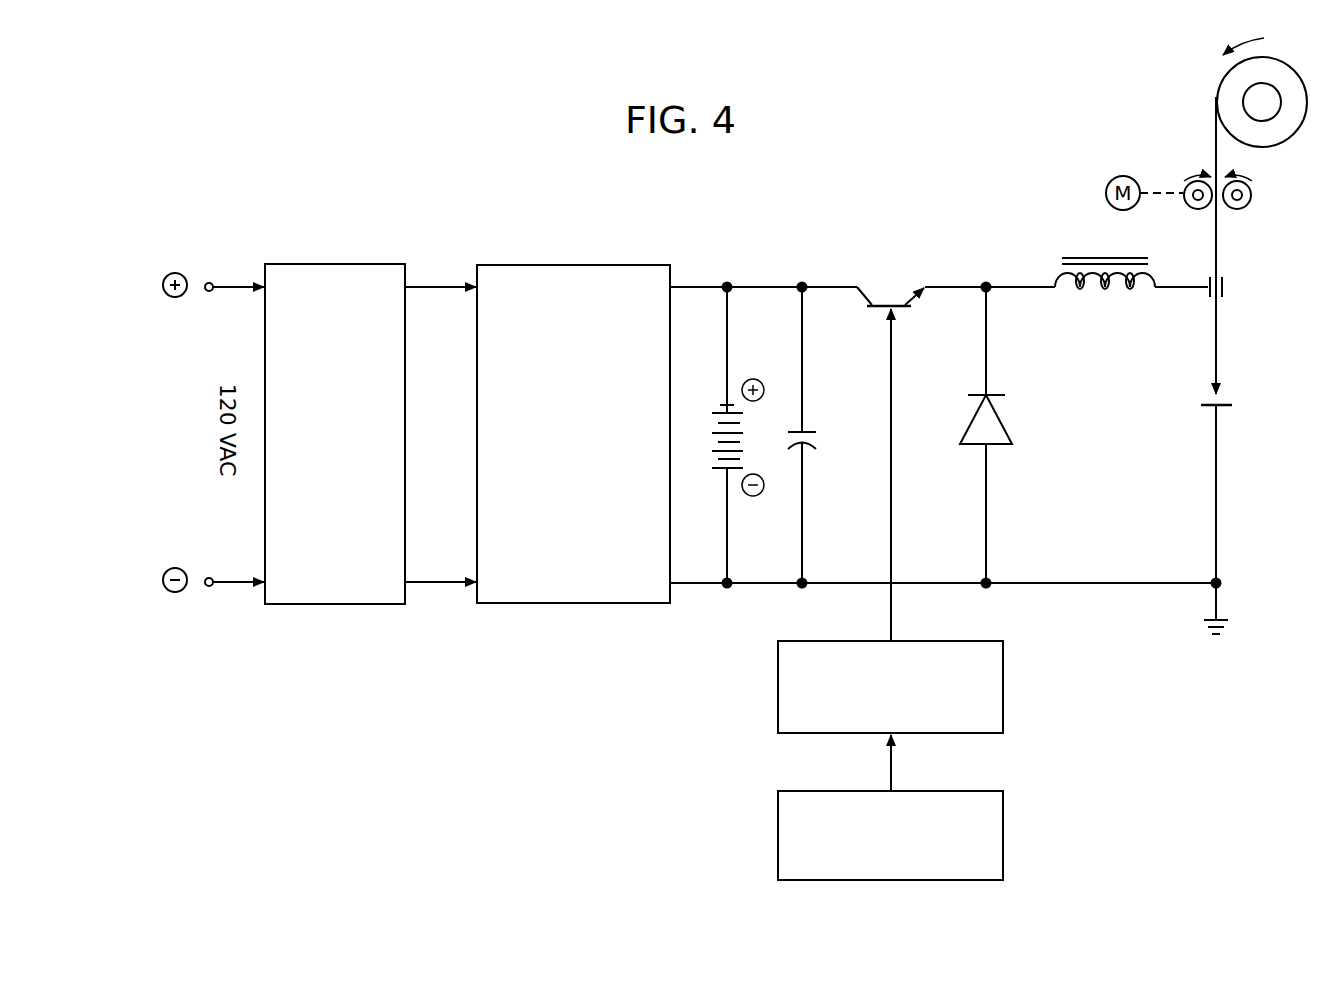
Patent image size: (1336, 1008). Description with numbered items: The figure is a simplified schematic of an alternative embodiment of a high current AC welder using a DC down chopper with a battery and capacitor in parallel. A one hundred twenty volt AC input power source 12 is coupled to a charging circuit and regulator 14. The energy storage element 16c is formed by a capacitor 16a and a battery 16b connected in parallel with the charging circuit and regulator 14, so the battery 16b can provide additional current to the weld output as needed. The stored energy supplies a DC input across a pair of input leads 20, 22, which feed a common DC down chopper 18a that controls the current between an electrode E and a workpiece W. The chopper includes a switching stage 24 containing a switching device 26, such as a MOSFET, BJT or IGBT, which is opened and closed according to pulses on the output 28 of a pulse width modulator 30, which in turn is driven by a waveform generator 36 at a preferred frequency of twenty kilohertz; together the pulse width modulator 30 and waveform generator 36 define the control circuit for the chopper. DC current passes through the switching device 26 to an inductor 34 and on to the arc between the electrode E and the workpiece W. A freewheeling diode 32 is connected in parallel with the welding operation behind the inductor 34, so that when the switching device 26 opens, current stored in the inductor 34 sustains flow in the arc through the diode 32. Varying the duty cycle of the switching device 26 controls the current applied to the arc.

The AC input power source 12 is at (342, 262).
The charging circuit and regulator 14 is at (582, 265).
The capacitor 16a is at (815, 428).
The battery 16b is at (719, 392).
The energy storage element 16c is at (753, 592).
The DC down chopper 18a is at (999, 593).
The input lead 20 is at (838, 284).
The input lead 22 is at (1083, 590).
The switching stage 24 is at (905, 312).
The switching device 26 is at (888, 300).
The output of pulse width modulator 28 is at (893, 505).
The pulse width modulator 30 is at (1003, 693).
The freewheeling diode 32 is at (1005, 425).
The inductor 34 is at (1072, 252).
The waveform generator 36 is at (1003, 812).
The electrode E is at (1230, 385).
The workpiece W is at (1230, 415).